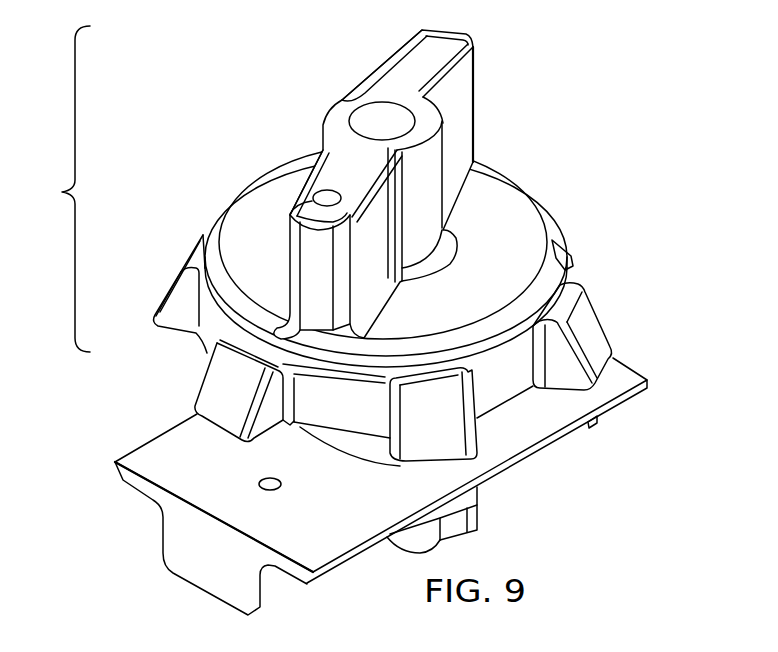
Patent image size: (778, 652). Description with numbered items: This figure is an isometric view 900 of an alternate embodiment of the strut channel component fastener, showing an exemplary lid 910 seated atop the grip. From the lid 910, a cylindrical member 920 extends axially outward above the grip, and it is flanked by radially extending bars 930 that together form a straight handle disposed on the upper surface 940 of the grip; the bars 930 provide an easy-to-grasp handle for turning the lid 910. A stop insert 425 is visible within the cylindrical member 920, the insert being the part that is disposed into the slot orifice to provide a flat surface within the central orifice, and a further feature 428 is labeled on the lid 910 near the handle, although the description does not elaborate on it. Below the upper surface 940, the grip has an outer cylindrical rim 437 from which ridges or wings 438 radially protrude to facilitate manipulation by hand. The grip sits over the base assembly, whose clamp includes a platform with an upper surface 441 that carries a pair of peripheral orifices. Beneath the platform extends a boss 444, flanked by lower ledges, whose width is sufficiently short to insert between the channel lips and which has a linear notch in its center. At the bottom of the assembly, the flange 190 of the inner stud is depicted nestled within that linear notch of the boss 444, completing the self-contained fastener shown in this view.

The isometric view 900 is at (632, 95).
The lid 910 is at (57, 189).
The cylindrical member 920 is at (431, 213).
The bars 930 is at (398, 55).
The upper surface 940 is at (503, 242).
The stop insert 425 is at (350, 115).
The indicator boss 428 is at (313, 183).
The outer cylindrical rim 437 is at (354, 423).
The wings 438 is at (452, 441).
The upper surface 441 is at (347, 528).
The boss 444 is at (167, 562).
The flange 190 is at (473, 518).